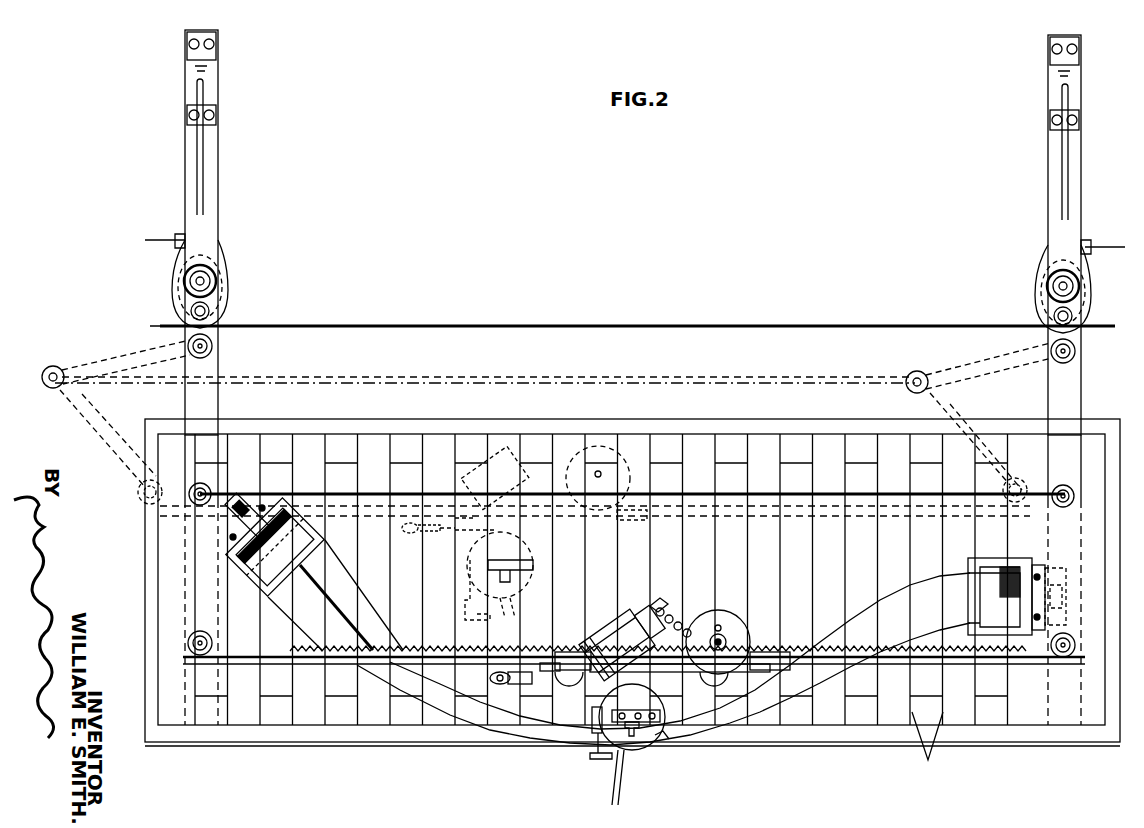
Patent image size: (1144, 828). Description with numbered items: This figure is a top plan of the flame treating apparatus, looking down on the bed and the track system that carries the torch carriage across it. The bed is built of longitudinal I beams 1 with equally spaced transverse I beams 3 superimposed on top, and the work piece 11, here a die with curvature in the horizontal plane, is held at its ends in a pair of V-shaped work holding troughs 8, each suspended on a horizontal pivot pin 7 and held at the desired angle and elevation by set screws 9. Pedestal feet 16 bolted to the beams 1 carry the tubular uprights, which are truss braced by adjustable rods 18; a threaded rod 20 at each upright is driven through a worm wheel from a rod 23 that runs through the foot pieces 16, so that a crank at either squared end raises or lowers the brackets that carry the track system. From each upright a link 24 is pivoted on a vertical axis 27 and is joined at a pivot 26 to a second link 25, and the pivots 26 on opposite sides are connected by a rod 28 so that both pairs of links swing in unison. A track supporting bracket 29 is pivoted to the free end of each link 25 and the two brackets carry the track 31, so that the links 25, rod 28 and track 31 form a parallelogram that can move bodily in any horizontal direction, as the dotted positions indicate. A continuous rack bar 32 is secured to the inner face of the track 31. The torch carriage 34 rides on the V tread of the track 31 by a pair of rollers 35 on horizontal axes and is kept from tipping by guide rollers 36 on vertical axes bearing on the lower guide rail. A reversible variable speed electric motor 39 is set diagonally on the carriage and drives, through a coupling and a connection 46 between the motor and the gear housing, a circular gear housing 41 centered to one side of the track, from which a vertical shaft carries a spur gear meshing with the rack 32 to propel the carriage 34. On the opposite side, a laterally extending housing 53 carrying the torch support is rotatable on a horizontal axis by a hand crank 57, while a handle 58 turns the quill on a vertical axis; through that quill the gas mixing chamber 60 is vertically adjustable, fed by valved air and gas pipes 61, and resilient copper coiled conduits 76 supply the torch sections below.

The I beams 1 is at (212, 137).
The equally spaced I beams 3 is at (632, 603).
The horizontal pivot pin 7 is at (230, 530).
The V-shaped work holding trough 8 is at (313, 538).
The set screws 9 is at (1036, 573).
The work piece 11 is at (494, 730).
The pedestal feet 16 is at (222, 310).
The adjustable rods 18 is at (205, 193).
The threaded rod 20 is at (192, 307).
The rod 23 is at (710, 326).
The link 24 is at (105, 358).
The link 25 is at (88, 440).
The pivot joint 26 is at (197, 507).
The vertical axis 27 is at (214, 348).
The rod 28 is at (285, 377).
The track supporting bracket 29 is at (212, 632).
The track 31 is at (143, 505).
The rack bar 32 is at (434, 640).
The flame treating torch carriage 34 is at (652, 670).
The rollers 35 is at (571, 652).
The guide rollers 36 is at (571, 688).
The reversible variable speed electric motor 39 is at (490, 487).
The circular gear housing 41 is at (618, 481).
The flexible shaft 46 is at (672, 630).
The laterally extending housing 53 is at (522, 587).
The hand crank 57 is at (379, 523).
The handle 58 is at (595, 757).
The gas mixing chamber 60 is at (633, 728).
The air and gas pipes 61 is at (660, 730).
The resilient copper coiled conduit 76 is at (618, 782).